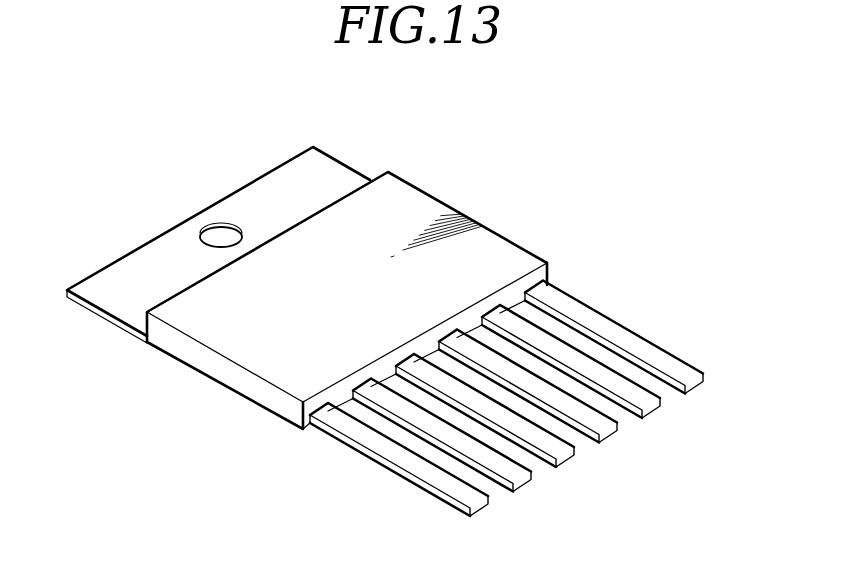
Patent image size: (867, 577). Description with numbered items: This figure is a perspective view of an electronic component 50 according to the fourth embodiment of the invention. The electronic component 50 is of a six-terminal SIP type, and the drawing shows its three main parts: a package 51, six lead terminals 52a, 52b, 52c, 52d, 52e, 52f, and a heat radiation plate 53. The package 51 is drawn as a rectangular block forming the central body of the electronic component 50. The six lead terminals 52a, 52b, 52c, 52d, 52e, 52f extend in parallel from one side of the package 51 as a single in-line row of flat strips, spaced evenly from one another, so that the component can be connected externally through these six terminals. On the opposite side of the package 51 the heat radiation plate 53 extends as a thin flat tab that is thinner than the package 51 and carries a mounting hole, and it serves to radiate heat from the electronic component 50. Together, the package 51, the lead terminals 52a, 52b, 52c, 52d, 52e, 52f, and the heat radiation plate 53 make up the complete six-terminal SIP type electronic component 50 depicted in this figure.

The electronic component 50 is at (573, 158).
The package 51 is at (232, 391).
The lead terminal 52a is at (403, 477).
The lead terminal 52b is at (531, 480).
The lead terminal 52c is at (574, 455).
The lead terminal 52d is at (617, 431).
The lead terminal 52e is at (660, 406).
The lead terminal 52f is at (703, 382).
The heat radiation plate 53 is at (258, 182).